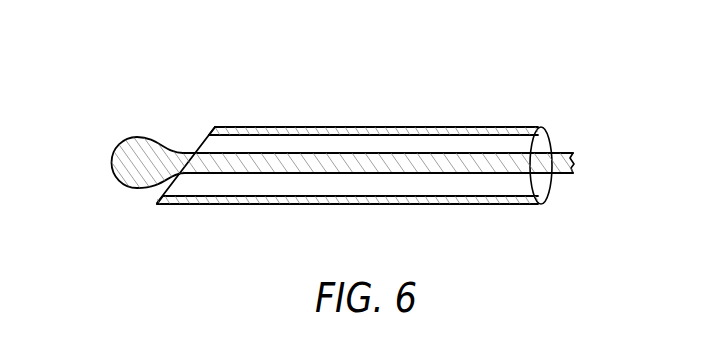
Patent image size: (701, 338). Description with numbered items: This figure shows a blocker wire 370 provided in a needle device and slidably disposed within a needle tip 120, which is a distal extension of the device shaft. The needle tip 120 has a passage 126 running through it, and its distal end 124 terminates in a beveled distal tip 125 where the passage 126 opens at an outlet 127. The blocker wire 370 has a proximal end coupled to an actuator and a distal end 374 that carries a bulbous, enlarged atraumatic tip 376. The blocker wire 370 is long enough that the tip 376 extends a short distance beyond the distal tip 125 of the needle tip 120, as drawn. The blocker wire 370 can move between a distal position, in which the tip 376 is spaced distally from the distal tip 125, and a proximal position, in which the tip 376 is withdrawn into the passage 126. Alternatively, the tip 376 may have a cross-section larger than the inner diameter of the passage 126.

The needle tip 120 is at (473, 121).
The distal end 124 is at (282, 127).
The distal tip 125 is at (160, 206).
The passage 126 is at (478, 197).
The outlet 127 is at (204, 135).
The blocker wire 370 is at (366, 143).
The distal end 374 is at (268, 175).
The atraumatic tip 376 is at (118, 182).